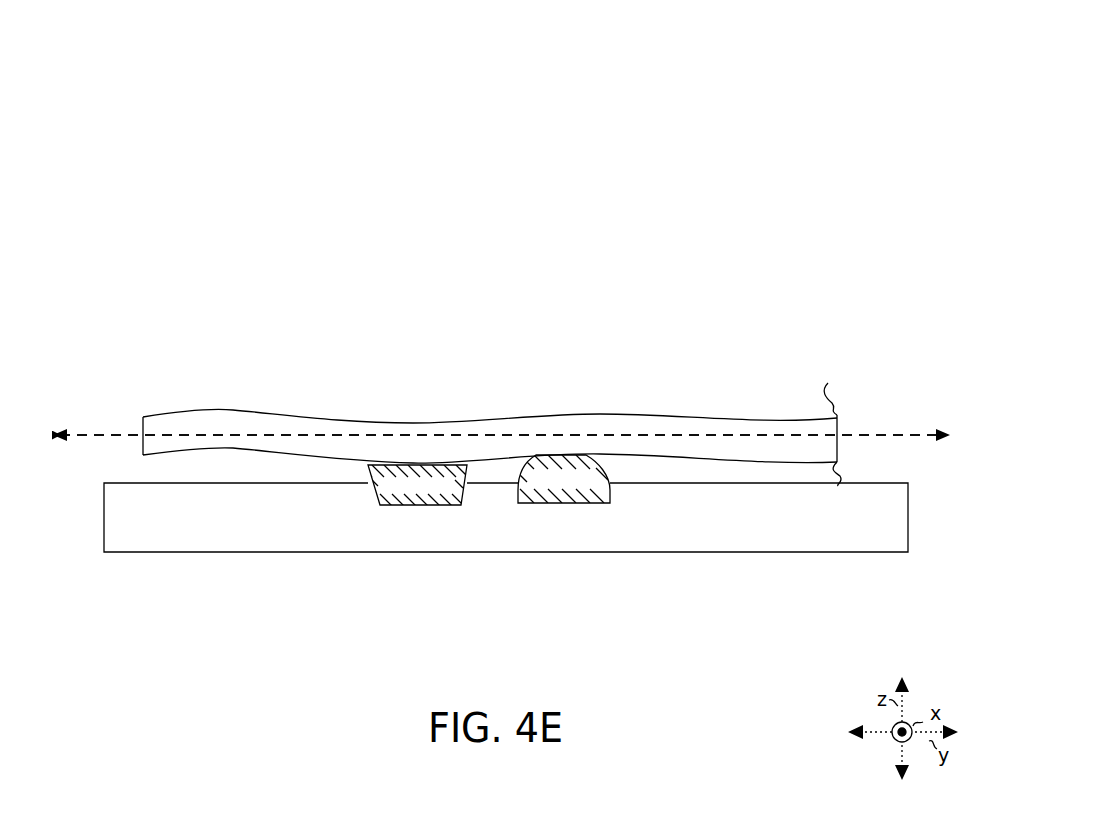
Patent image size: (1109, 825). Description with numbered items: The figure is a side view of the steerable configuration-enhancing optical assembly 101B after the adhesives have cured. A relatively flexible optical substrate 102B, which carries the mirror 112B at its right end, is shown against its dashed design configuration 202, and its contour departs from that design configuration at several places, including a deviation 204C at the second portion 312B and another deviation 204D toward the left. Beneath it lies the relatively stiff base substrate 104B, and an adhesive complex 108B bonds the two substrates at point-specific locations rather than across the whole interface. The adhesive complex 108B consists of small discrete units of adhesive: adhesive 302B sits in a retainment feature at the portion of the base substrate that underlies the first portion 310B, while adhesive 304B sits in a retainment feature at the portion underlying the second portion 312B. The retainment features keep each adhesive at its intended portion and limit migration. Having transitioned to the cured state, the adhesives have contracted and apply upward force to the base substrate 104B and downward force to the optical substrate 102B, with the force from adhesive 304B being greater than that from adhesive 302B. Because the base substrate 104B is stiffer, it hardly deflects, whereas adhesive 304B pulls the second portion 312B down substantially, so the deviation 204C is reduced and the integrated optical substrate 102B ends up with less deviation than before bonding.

The steerable configuration-enhancing optical assembly 101B is at (675, 90).
The optical substrate 102B is at (249, 320).
The design configuration 202 is at (93, 436).
The first portion 310B is at (413, 421).
The second portion 312B is at (553, 411).
The deviation 204C is at (607, 416).
The mirror 112B is at (866, 421).
The base substrate 104B is at (905, 526).
The adhesive 302B is at (392, 496).
The adhesive 304B is at (562, 479).
The deviation 204D is at (357, 463).
The adhesive complex 108B is at (644, 546).